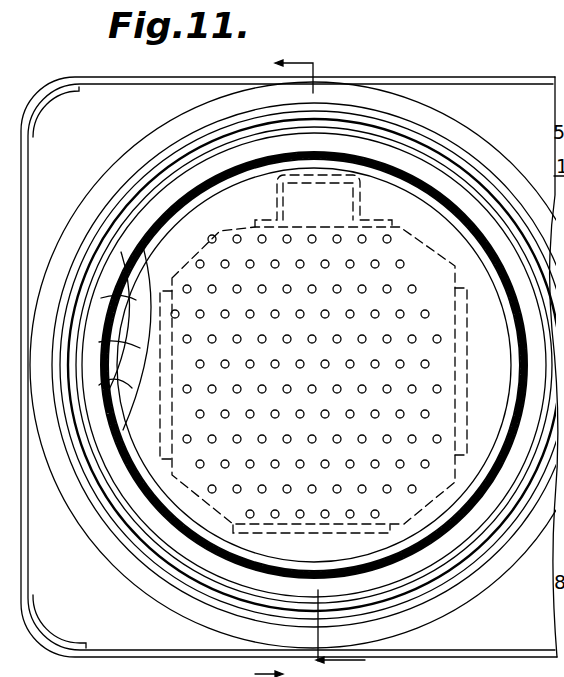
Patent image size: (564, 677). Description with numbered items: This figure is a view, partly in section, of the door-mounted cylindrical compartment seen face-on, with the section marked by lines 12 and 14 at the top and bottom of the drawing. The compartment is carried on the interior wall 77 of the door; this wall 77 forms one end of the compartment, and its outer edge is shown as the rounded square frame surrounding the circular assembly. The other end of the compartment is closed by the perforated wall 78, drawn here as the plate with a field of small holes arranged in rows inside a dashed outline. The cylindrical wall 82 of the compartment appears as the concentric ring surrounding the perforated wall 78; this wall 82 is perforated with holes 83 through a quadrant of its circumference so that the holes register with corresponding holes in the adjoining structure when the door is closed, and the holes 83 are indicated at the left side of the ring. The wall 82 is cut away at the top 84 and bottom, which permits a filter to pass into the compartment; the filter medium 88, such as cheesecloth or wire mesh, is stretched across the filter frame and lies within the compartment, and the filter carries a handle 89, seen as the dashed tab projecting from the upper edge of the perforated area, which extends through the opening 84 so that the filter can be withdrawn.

The section line 12 is at (320, 365).
The section line 14 is at (281, 669).
The interior wall 77 is at (510, 627).
The perforated wall 78 is at (412, 232).
The cylindrical wall 82 is at (158, 210).
The holes 83 is at (118, 350).
The top cutaway 84 is at (235, 165).
The filter medium 88 is at (495, 548).
The handle 89 is at (277, 206).